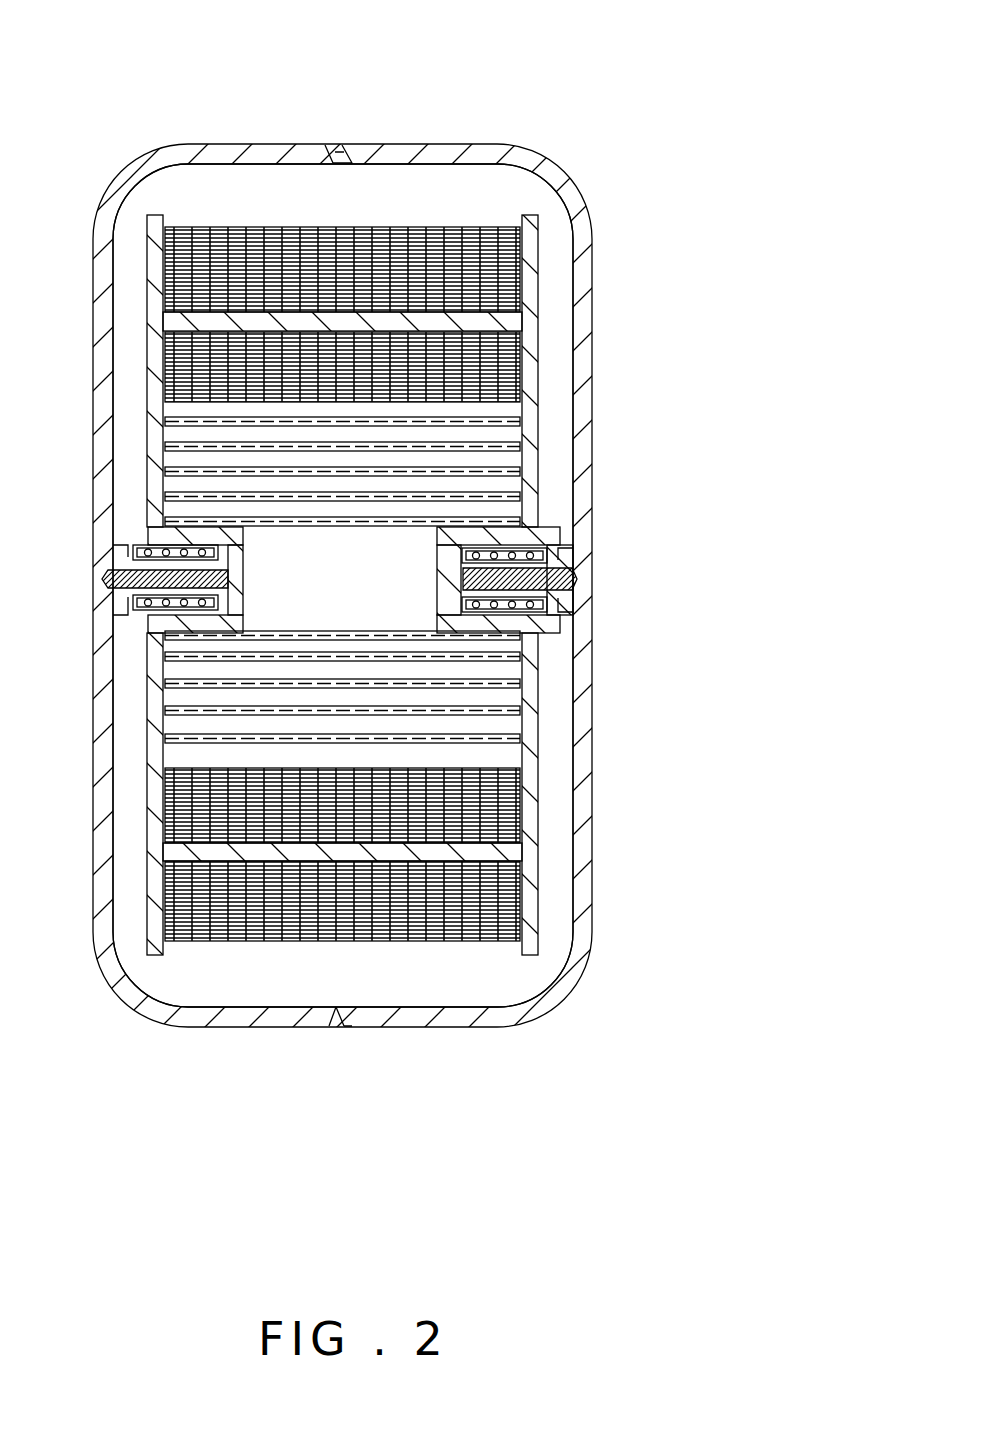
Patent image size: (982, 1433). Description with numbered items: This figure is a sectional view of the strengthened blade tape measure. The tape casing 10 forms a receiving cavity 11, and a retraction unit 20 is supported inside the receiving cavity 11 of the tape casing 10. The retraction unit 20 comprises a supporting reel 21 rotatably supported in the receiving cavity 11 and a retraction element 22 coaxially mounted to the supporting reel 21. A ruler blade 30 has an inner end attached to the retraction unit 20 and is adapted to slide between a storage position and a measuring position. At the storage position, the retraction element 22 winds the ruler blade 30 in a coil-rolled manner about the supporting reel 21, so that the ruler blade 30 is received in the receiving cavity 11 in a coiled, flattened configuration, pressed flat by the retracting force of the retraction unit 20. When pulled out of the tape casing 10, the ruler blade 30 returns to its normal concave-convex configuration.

The tape casing 10 is at (245, 152).
The receiving cavity 11 is at (449, 196).
The retraction unit 20 is at (456, 554).
The supporting reel 21 is at (540, 548).
The retraction element 22 is at (470, 473).
The ruler blade 30 is at (520, 237).